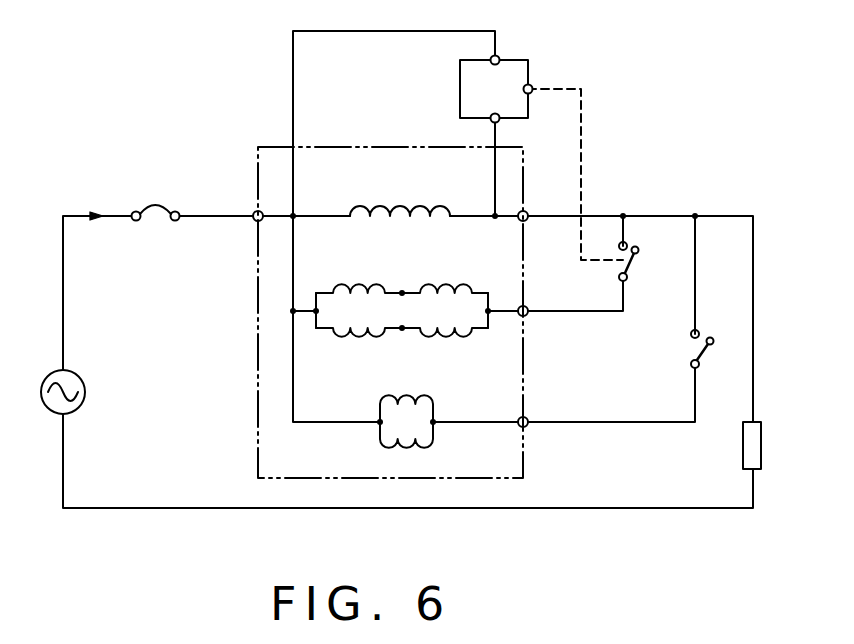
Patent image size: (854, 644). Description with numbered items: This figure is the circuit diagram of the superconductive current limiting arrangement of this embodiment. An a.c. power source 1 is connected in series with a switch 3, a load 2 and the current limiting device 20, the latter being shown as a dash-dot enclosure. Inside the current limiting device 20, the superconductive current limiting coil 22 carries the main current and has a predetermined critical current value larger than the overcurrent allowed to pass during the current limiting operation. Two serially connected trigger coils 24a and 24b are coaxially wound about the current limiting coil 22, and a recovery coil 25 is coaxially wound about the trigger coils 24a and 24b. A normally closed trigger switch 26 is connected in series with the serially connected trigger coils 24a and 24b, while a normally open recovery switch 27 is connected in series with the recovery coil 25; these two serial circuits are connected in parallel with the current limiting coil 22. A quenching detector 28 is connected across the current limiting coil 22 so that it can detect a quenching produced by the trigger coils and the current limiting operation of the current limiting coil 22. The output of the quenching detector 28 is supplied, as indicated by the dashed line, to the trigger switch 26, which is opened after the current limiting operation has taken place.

The a.c. power source 1 is at (86, 390).
The load 2 is at (743, 446).
The switch 3 is at (158, 196).
The current limiting device 20 is at (258, 305).
The superconductive current limiting coil 22 is at (401, 206).
The trigger coil 24a is at (343, 284).
The trigger coil 24b is at (441, 285).
The recovery coil 25 is at (406, 400).
The trigger switch 26 is at (636, 264).
The recovery switch 27 is at (709, 354).
The quenching detector 28 is at (528, 60).